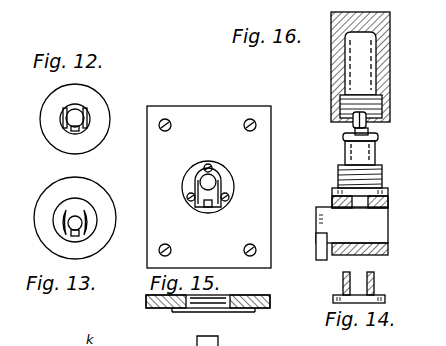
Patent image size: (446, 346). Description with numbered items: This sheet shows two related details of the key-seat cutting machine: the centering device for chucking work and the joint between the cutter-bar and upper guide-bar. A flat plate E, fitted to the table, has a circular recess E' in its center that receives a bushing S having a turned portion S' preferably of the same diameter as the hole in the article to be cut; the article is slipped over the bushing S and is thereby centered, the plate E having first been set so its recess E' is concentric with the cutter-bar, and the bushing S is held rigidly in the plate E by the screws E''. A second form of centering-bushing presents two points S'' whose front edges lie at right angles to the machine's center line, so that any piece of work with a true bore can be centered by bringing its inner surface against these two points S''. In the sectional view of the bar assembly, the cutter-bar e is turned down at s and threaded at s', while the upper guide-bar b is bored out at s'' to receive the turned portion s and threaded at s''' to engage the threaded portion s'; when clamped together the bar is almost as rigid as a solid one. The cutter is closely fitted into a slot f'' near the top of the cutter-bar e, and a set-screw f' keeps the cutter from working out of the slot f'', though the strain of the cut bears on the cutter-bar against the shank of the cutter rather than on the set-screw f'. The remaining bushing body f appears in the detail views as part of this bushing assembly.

In FIG. 13, the bushing S is at (72, 218).
In FIG. 15, the bushing S is at (190, 187).
In FIG. 15, the turned portion S' is at (216, 179).
In FIG. 13, the points S'' is at (74, 227).
In FIG. 15, the flat plate E is at (207, 215).
In FIG. 15, the circular recess E' is at (208, 230).
In FIG. 15, the screws E'' is at (210, 187).
In FIG. 16, the upper guide-bar b is at (352, 67).
In FIG. 14, the turned-down portion s is at (359, 287).
In FIG. 16, the threaded portion s' is at (371, 149).
In FIG. 16, the bore s'' is at (371, 114).
In FIG. 16, the threaded portion of guide-bar s''' is at (343, 130).
In FIG. 16, the cutter-bar e is at (351, 198).
In FIG. 16, the base block f is at (352, 233).
In FIG. 16, the set-screw f' is at (375, 124).
In FIG. 16, the slot f'' is at (369, 248).